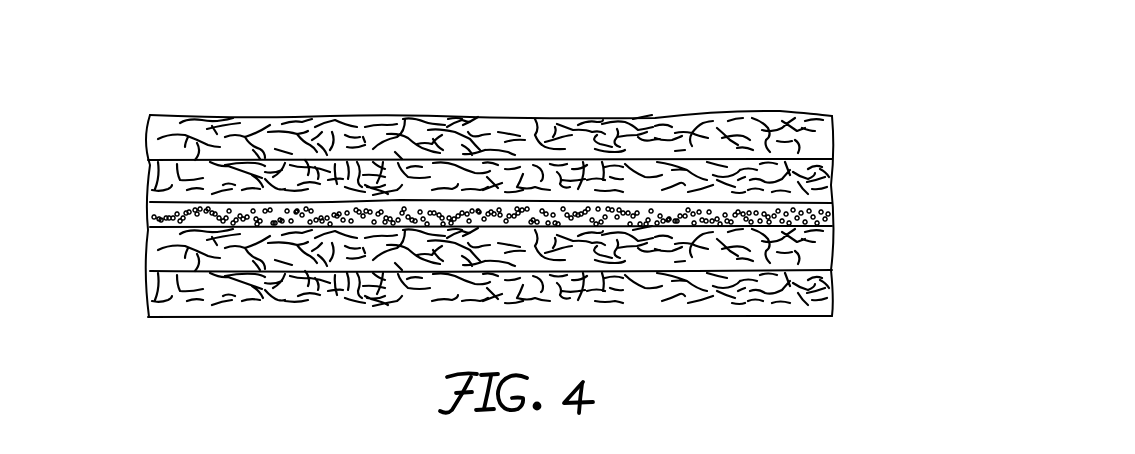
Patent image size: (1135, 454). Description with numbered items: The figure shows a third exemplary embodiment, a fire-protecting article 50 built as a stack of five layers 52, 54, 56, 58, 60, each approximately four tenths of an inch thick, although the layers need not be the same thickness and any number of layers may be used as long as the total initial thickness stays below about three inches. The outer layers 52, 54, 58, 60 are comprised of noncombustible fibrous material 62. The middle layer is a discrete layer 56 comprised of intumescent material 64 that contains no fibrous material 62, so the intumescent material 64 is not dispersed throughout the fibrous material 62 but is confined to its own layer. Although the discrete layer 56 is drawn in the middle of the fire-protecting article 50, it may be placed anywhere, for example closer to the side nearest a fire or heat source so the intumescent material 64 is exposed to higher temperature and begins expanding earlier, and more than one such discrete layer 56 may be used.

The fire-protecting article 50 is at (796, 63).
The layer 52 is at (832, 131).
The layer 54 is at (832, 176).
The discrete layer 56 is at (499, 217).
The layer 58 is at (832, 253).
The layer 60 is at (832, 297).
The noncombustible fibrous material 62 is at (246, 300).
The intumescent material 64 is at (150, 218).